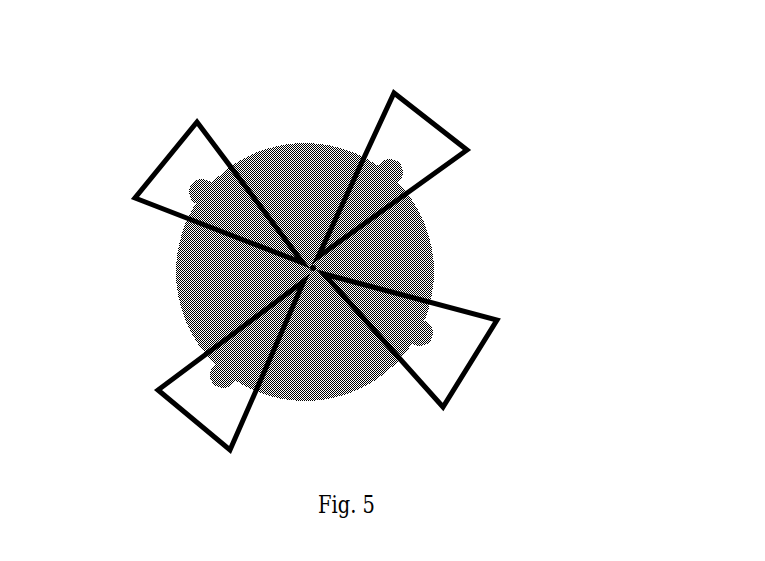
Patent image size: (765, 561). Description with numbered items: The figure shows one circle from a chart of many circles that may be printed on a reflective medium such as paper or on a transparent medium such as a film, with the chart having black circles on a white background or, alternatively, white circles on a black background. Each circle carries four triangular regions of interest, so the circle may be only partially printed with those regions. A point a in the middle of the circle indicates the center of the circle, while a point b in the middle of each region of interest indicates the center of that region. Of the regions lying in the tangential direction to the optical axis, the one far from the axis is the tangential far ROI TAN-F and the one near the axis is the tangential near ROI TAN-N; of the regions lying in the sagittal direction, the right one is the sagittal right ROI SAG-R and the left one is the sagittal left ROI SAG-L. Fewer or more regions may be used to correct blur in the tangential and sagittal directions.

The point in the middle of the circle a is at (330, 263).
The point in the middle of the ROI b is at (406, 174).
The tangential far ROI TAN-F is at (178, 192).
The sagittal right ROI SAG-R is at (440, 174).
The tangential near ROI TAN-N is at (460, 340).
The sagittal left ROI SAG-L is at (183, 367).